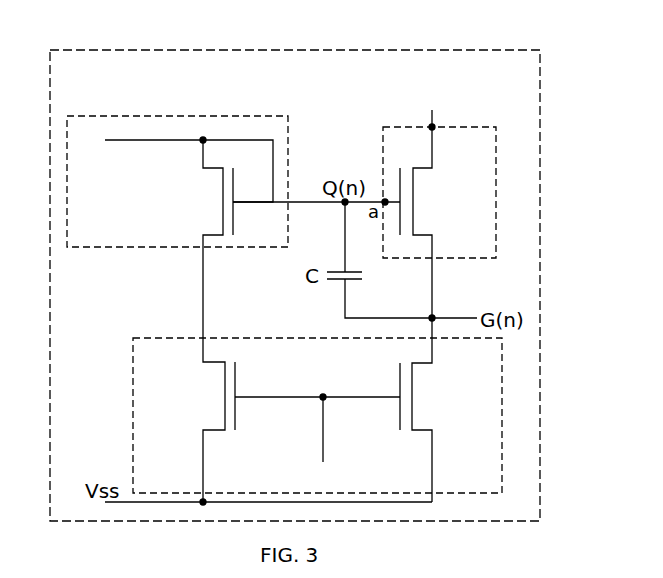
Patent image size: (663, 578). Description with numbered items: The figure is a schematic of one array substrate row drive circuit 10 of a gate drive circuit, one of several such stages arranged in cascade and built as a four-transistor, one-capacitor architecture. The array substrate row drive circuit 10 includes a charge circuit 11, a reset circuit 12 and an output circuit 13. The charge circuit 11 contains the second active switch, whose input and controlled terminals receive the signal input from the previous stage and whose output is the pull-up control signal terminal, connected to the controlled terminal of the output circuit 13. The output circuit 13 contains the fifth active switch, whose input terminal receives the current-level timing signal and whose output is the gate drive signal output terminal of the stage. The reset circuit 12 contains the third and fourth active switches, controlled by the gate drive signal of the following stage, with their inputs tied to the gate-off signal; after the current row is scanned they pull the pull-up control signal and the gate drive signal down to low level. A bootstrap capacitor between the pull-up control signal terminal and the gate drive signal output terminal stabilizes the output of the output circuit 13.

The array substrate row drive circuit 10 is at (279, 49).
The charge circuit 11 is at (141, 114).
The reset circuit 12 is at (175, 336).
The output circuit 13 is at (395, 125).